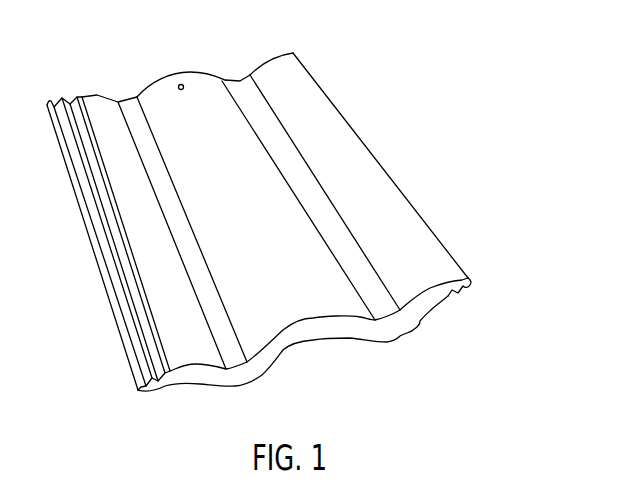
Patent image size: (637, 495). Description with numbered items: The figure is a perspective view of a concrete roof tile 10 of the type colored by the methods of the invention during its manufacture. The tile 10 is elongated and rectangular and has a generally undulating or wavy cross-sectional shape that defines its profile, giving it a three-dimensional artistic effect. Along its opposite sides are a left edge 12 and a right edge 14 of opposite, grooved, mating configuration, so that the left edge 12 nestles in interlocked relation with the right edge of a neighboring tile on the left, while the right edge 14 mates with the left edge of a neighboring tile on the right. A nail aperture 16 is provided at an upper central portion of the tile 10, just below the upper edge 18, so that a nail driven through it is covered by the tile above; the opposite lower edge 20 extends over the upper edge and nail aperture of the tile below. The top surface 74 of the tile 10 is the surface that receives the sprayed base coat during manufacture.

The concrete roof tile 10 is at (425, 192).
The left edge 12 is at (117, 313).
The right edge 14 is at (463, 273).
The nail aperture 16 is at (184, 84).
The upper edge 18 is at (158, 79).
The lower edge 20 is at (282, 351).
The top surface 74 is at (338, 125).